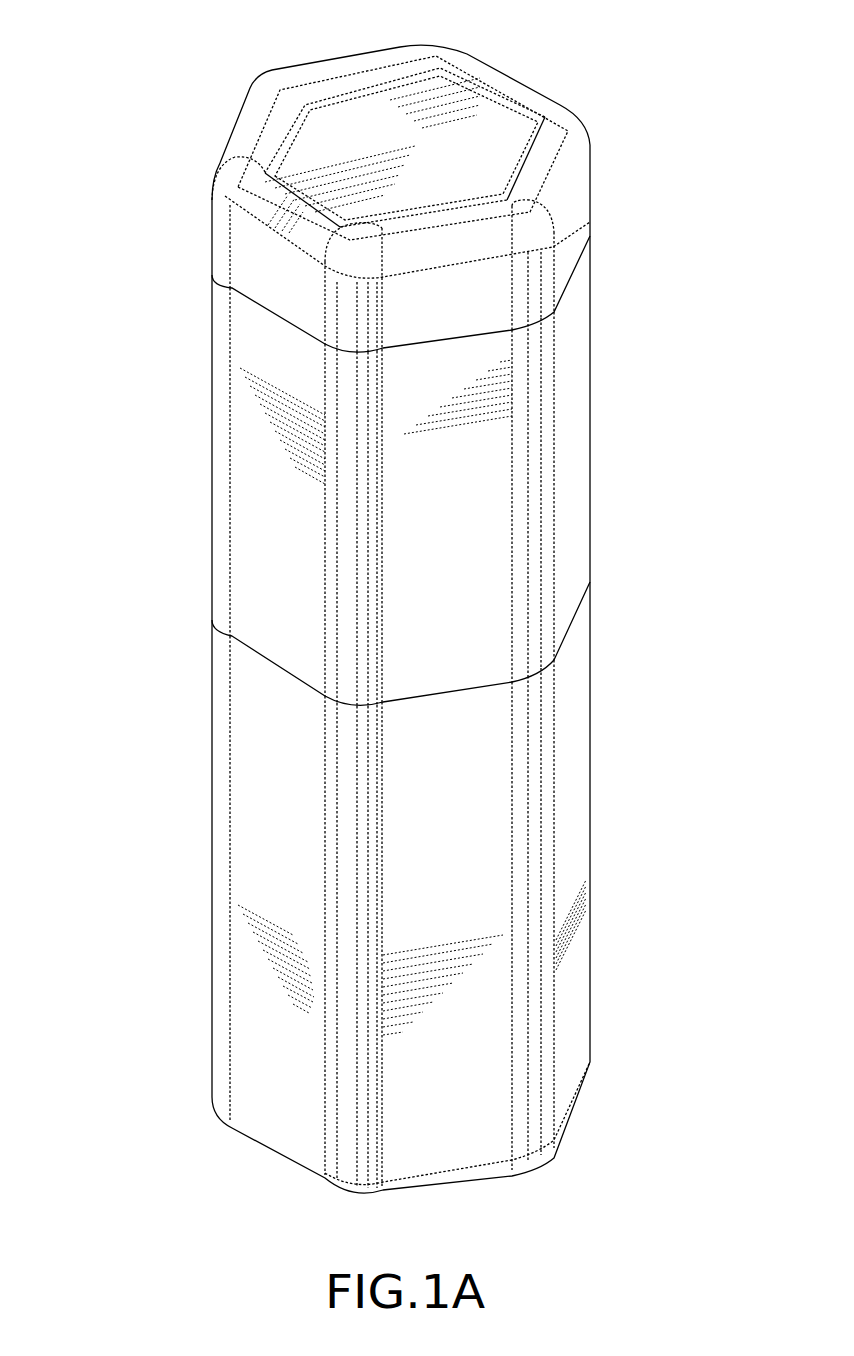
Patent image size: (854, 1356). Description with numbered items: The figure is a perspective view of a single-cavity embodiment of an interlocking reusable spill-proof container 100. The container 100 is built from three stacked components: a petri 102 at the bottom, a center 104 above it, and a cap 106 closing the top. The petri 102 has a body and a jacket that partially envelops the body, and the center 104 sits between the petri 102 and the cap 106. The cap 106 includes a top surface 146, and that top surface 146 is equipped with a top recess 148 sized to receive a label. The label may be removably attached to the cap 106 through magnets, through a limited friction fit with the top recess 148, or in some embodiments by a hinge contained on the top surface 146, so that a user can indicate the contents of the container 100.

The interlocking reusable spill-proof container 100 is at (746, 776).
The petri 102 is at (201, 870).
The center 104 is at (201, 476).
The cap 106 is at (213, 131).
The top surface 146 is at (490, 131).
The top recess 148 is at (407, 103).